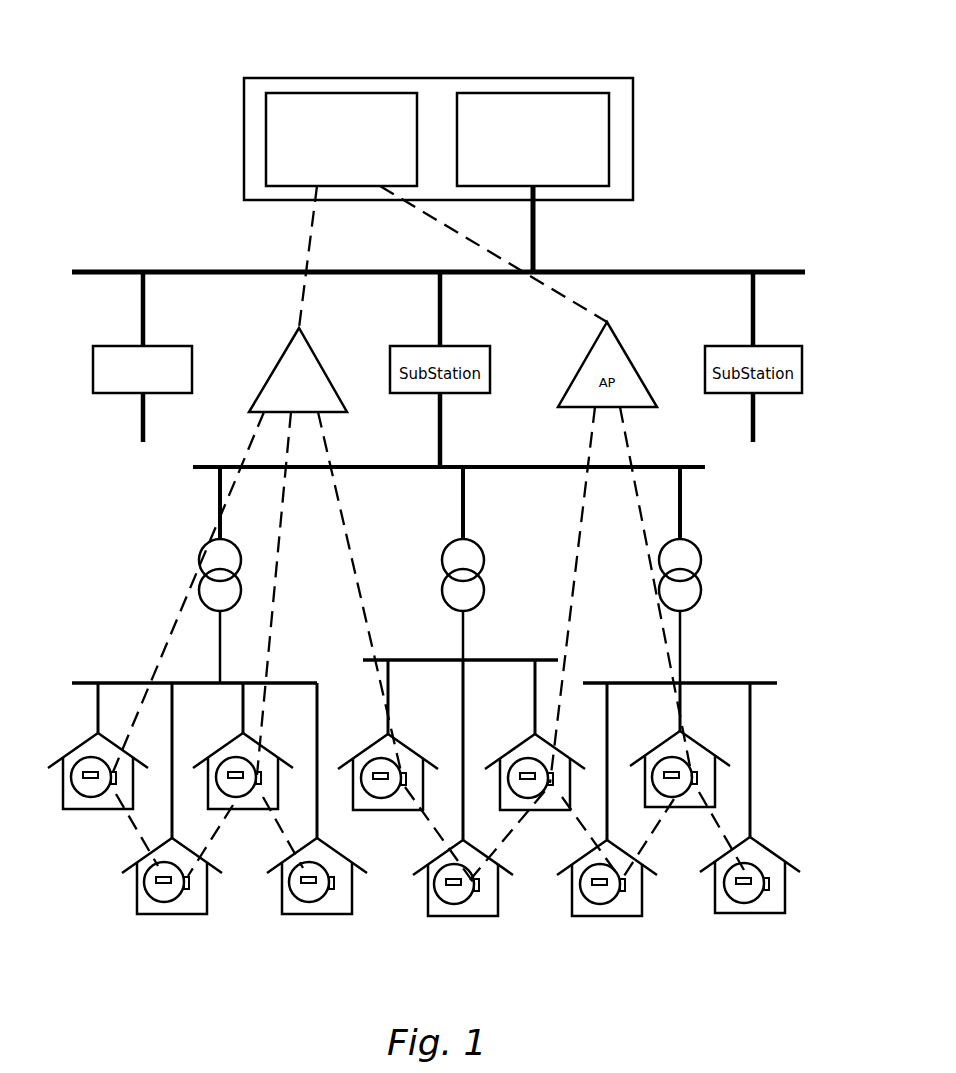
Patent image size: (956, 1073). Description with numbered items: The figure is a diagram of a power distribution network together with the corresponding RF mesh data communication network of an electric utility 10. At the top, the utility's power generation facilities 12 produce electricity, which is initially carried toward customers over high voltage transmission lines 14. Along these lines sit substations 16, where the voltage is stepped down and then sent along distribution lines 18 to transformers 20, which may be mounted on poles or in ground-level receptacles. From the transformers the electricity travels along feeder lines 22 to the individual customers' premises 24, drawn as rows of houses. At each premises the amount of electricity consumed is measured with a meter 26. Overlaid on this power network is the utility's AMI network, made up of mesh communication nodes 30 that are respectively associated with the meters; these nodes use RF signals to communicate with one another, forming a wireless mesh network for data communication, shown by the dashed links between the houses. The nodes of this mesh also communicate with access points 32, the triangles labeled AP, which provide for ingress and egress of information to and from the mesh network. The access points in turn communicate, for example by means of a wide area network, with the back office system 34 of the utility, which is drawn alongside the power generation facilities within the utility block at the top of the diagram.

The electric utility 10 is at (583, 78).
The power generation facilities 12 is at (609, 158).
The high voltage transmission lines 14 is at (675, 270).
The substations 16 is at (93, 360).
The distribution lines 18 is at (362, 466).
The transformers 20 is at (485, 556).
The feeder lines 22 is at (280, 683).
The customers' premises 24 is at (98, 785).
The meter 26 is at (88, 797).
The mesh communication node 30 is at (116, 777).
The access point 32 is at (277, 364).
The back office system 34 is at (266, 153).